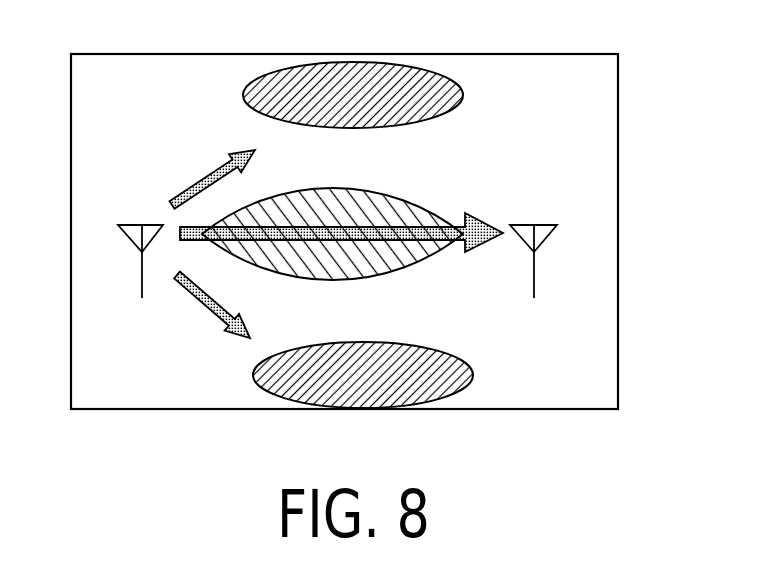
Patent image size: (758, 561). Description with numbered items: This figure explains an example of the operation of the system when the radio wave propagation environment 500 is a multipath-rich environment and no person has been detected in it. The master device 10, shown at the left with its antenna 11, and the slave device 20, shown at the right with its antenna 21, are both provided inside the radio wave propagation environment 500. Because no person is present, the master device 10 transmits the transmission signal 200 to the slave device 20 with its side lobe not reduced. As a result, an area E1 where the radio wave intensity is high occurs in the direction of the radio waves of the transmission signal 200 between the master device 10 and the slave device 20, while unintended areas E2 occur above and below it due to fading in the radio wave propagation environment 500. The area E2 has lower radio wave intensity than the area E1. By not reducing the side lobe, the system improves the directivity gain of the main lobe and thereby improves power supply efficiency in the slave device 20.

The radio wave propagation environment 500 is at (618, 92).
The master device 10 is at (92, 246).
The antenna 11 is at (125, 233).
The slave device 20 is at (550, 228).
The antenna 21 is at (548, 236).
The transmission signal 200 is at (330, 226).
The area where radio wave intensity is high E1 is at (420, 189).
The unintended area E2 is at (419, 57).